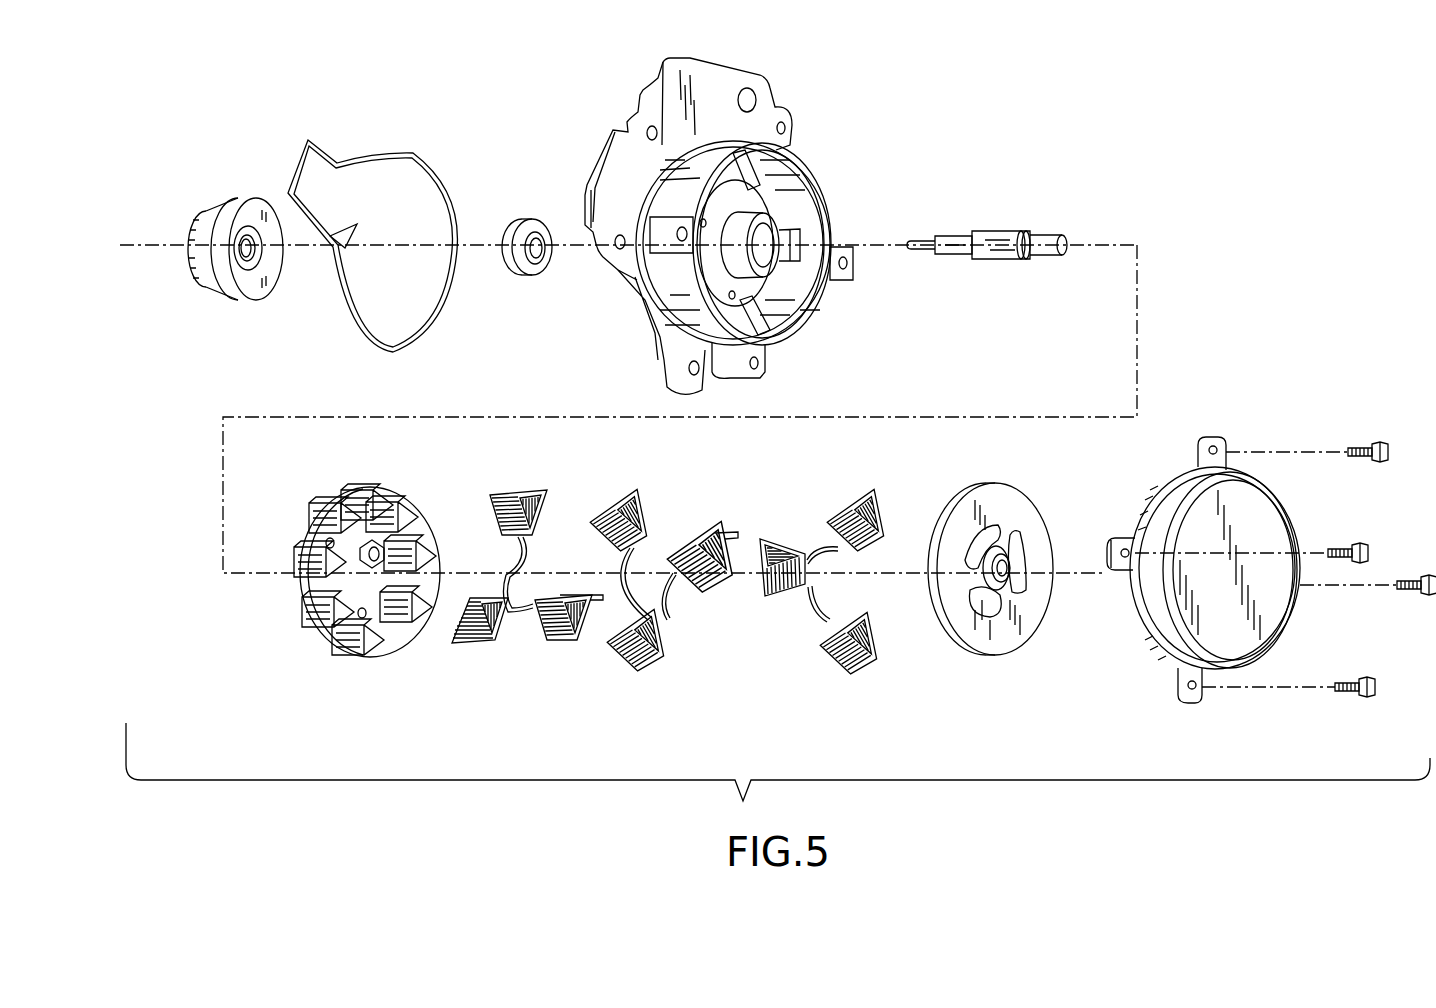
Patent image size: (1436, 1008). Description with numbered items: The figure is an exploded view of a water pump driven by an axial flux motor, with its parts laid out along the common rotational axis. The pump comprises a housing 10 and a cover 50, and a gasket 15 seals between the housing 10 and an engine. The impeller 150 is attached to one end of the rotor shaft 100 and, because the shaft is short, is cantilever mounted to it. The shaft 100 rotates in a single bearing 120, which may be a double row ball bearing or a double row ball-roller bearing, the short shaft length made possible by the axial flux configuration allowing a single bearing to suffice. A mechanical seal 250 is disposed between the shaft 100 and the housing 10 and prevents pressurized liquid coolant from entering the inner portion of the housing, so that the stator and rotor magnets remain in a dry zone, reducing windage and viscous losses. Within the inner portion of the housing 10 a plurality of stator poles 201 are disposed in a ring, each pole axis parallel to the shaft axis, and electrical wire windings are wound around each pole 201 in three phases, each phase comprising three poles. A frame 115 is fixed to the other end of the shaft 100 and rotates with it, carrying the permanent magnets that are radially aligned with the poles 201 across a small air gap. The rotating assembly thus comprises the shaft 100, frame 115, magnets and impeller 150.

The housing 10 is at (634, 110).
The gasket 15 is at (387, 157).
The cover 50 is at (1150, 492).
The rotor shaft 100 is at (993, 253).
The frame 115 is at (973, 490).
The bearing 120 is at (1025, 195).
The impeller 150 is at (222, 200).
The stator poles 201 is at (367, 490).
The mechanical seal 250 is at (523, 215).